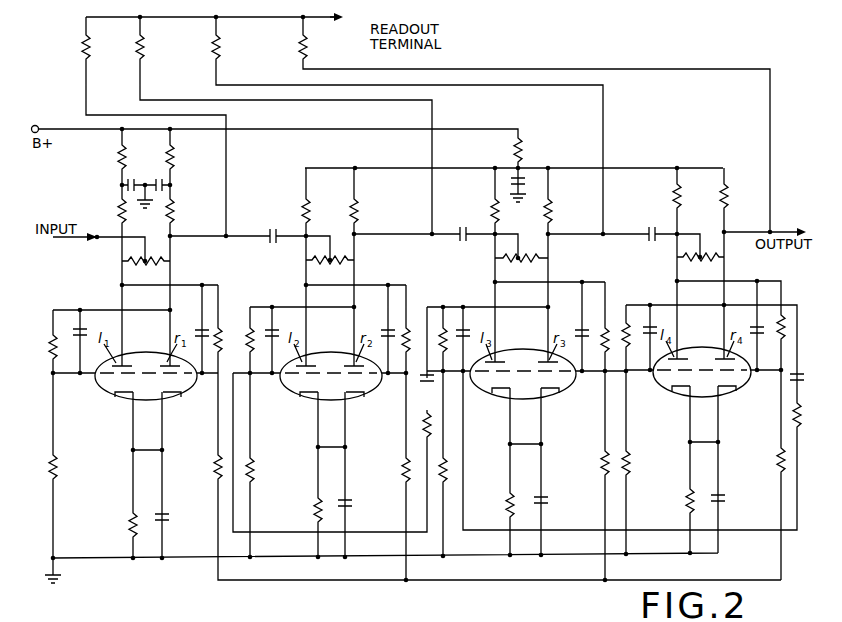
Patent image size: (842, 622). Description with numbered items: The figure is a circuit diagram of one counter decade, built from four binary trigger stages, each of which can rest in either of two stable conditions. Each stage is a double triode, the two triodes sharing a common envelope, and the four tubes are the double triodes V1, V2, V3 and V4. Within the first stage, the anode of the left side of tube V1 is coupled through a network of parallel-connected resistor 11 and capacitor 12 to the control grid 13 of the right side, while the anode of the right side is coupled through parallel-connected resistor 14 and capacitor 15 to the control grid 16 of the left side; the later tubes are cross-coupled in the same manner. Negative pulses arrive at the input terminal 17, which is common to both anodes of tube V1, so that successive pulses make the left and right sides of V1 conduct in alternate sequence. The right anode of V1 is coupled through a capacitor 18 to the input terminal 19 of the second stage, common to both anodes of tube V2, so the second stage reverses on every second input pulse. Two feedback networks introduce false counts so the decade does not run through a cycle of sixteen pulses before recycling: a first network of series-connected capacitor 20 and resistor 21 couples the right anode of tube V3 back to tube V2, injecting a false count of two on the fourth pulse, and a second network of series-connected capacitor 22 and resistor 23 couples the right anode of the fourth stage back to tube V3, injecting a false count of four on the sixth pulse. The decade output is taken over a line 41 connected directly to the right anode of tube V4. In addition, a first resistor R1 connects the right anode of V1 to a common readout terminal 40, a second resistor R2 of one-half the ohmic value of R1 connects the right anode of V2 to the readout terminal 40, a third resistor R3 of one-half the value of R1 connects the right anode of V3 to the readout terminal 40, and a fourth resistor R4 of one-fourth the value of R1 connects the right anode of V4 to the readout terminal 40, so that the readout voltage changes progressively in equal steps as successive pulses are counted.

The resistor 11 is at (221, 334).
The capacitor 12 is at (200, 329).
The control grid 13 is at (181, 389).
The resistor 14 is at (52, 339).
The capacitor 15 is at (79, 328).
The control grid 16 is at (113, 393).
The input terminal 17 is at (98, 236).
The capacitor 18 is at (278, 231).
The input terminal 19 is at (331, 256).
The capacitor 20 is at (424, 386).
The resistor 21 is at (424, 418).
The capacitor 22 is at (795, 381).
The resistor 23 is at (796, 414).
The common readout terminal 40 is at (305, 17).
The output line 41 is at (772, 231).
The first resistor R1 is at (84, 48).
The second resistor R2 is at (136, 50).
The third resistor R3 is at (213, 49).
The fourth resistor R4 is at (300, 45).
The double triode V1 is at (147, 356).
The double triode V2 is at (330, 356).
The double triode V3 is at (520, 355).
The double triode V4 is at (700, 352).